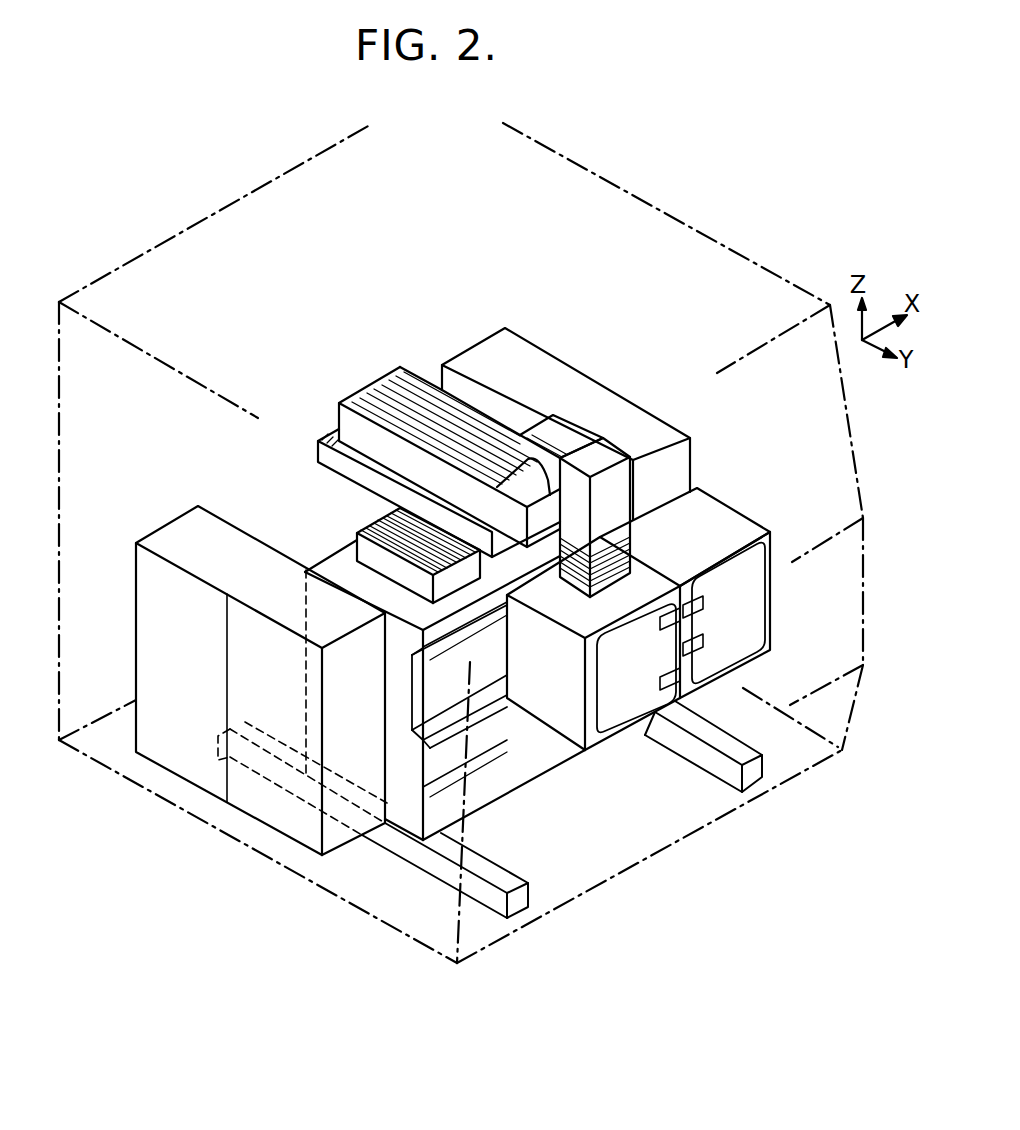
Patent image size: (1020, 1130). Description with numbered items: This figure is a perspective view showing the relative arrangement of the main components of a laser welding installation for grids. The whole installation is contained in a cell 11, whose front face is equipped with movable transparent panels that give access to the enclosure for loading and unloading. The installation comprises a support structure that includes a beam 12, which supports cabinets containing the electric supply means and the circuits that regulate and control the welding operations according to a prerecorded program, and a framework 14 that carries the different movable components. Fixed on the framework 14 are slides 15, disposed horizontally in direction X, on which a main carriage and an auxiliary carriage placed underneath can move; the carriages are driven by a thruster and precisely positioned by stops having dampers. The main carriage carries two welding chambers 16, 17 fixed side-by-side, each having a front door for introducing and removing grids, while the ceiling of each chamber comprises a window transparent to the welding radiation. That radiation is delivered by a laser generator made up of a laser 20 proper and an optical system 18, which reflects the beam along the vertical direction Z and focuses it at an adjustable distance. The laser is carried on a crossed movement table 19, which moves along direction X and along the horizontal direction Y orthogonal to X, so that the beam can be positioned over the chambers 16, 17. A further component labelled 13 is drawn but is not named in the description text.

The cell 11 is at (740, 252).
The beam 12 is at (520, 903).
The housing box 13 is at (182, 740).
The framework 14 is at (398, 812).
The slides 15 is at (467, 630).
The welding chamber 16 is at (635, 665).
The welding chamber 17 is at (740, 593).
The optical system 18 is at (618, 495).
The crossed movement table 19 is at (355, 472).
The laser 20 is at (372, 397).